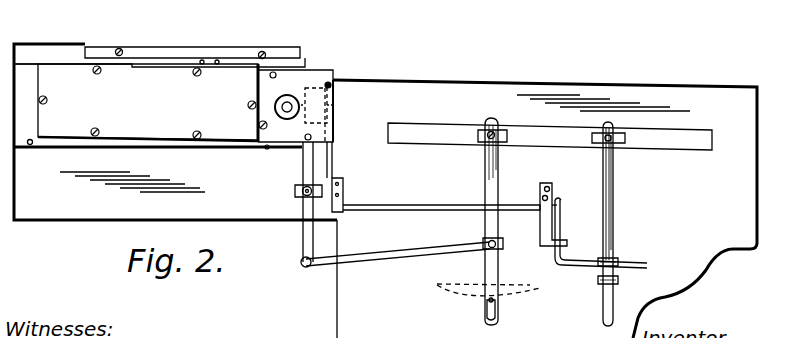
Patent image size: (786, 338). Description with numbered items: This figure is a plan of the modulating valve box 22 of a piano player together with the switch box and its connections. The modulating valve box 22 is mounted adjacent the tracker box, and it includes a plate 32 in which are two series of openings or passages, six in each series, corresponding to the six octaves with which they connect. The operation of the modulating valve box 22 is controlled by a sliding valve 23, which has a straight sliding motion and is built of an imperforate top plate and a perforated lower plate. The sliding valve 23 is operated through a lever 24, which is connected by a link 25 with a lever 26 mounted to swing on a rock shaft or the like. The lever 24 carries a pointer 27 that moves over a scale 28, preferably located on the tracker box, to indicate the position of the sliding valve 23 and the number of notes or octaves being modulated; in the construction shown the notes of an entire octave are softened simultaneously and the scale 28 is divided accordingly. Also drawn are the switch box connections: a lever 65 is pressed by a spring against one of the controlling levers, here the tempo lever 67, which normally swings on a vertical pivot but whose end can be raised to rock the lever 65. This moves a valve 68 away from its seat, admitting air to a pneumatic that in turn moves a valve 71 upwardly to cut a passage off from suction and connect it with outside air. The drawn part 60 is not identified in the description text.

The modulating valve box 22 is at (148, 102).
The sliding valve 23 is at (163, 63).
The lever 24 is at (494, 178).
The link 25 is at (407, 255).
The lever 26 is at (305, 209).
The pointer 27 is at (493, 300).
The scale 28 is at (540, 290).
The plate 32 is at (36, 36).
The crank rod 60 is at (546, 246).
The lever 65 is at (560, 223).
The tempo lever 67 is at (617, 227).
The valve 68 is at (343, 81).
The valve 71 is at (291, 93).